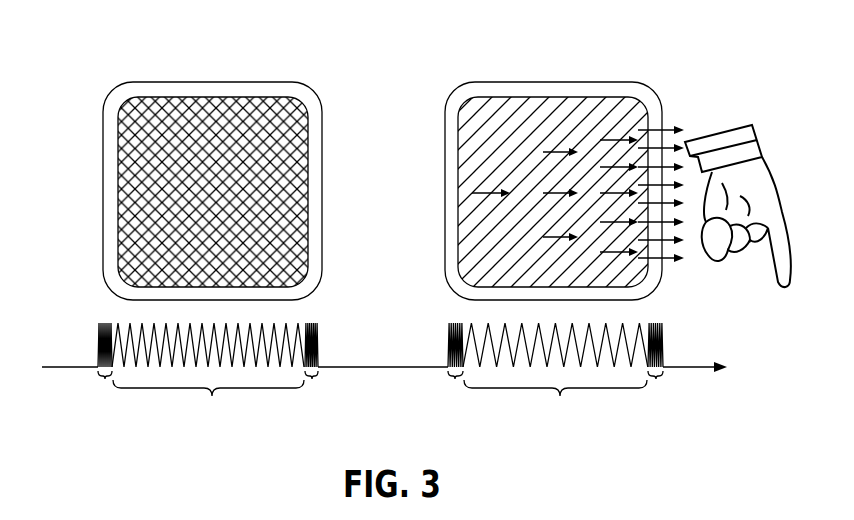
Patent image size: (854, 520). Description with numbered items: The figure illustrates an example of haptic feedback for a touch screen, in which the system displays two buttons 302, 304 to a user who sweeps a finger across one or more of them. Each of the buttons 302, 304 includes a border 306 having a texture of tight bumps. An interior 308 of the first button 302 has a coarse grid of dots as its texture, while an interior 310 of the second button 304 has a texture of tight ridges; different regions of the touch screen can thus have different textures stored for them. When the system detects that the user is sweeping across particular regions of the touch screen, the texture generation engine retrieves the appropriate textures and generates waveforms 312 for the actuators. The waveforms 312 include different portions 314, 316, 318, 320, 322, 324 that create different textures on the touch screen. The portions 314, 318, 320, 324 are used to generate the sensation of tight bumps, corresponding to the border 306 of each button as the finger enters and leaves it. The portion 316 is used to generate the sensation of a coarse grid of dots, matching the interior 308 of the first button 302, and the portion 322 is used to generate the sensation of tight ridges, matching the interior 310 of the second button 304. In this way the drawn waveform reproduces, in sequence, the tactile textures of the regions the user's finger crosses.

The button 302 is at (208, 53).
The button 304 is at (550, 58).
The border 306 is at (140, 90).
The interior 308 is at (140, 235).
The interior 310 is at (473, 243).
The waveforms 312 is at (63, 366).
The portion 314 is at (105, 380).
The portion 316 is at (208, 374).
The portion 318 is at (312, 380).
The portion 320 is at (455, 380).
The portion 322 is at (555, 374).
The portion 324 is at (656, 380).